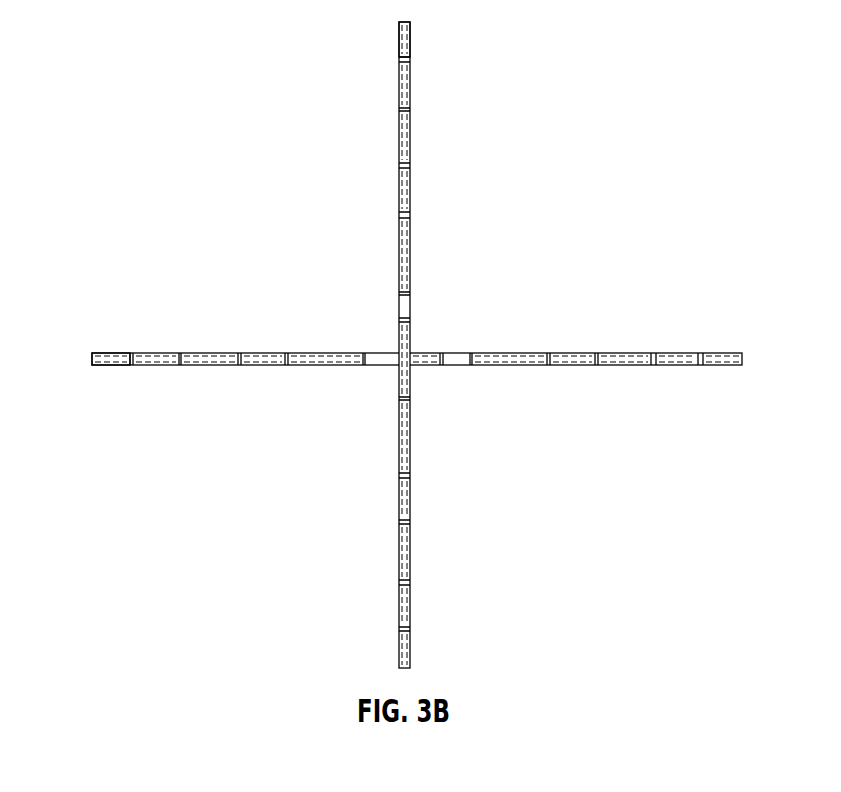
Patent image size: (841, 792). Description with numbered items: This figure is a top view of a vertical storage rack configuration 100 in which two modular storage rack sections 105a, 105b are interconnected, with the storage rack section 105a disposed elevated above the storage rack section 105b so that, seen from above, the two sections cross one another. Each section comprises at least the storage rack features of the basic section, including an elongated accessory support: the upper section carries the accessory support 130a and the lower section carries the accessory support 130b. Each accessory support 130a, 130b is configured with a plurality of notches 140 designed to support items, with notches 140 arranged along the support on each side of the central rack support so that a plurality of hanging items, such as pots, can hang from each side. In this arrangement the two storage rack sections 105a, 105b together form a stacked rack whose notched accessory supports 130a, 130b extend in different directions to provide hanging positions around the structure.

The lighting system 100 is at (171, 68).
The storage rack section 105a is at (443, 139).
The storage rack section 105b is at (569, 404).
The accessory support 130a is at (410, 43).
The accessory support 130b is at (102, 352).
The notches 140 is at (163, 352).